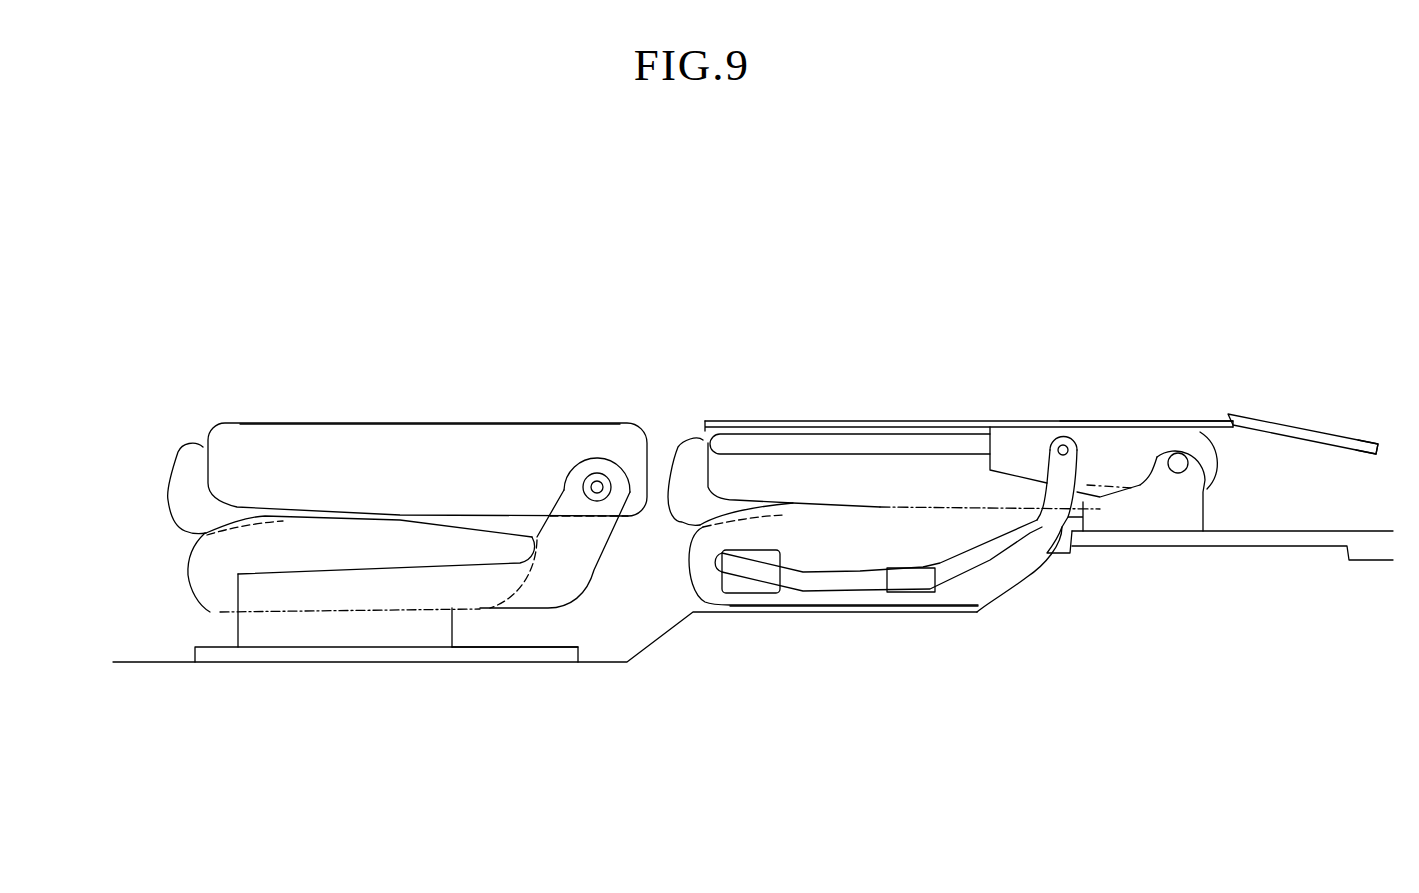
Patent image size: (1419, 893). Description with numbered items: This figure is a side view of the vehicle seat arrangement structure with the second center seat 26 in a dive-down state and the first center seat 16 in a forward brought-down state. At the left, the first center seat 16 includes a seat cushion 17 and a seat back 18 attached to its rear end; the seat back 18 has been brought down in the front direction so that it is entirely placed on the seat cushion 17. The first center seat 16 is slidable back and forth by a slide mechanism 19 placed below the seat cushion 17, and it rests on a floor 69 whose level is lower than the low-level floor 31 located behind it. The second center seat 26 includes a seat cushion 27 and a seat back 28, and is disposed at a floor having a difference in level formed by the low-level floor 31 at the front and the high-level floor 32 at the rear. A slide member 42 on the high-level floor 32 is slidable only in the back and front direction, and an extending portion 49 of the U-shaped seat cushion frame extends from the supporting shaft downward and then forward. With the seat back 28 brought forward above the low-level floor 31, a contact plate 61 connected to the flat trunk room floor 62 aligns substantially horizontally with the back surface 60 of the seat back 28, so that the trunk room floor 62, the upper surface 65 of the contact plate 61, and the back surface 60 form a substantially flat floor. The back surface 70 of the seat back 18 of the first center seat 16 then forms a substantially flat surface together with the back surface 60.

The first center seat 16 is at (164, 436).
The seat cushion 17 is at (216, 614).
The seat back 18 is at (304, 421).
The slide mechanism 19 is at (403, 652).
The second center seat 26 is at (814, 409).
The seat cushion 27 is at (790, 609).
The seat back 28 is at (705, 419).
The low-level floor 31 is at (880, 606).
The high-level floor 32 is at (1240, 543).
The slide member 42 is at (1198, 515).
The extending portion 49 is at (990, 558).
The back surface 60 is at (930, 423).
The contact plate 61 is at (1317, 426).
The trunk room floor 62 is at (1392, 443).
The upper surface 65 is at (1256, 413).
The floor 69 is at (478, 655).
The back surface 70 is at (420, 423).